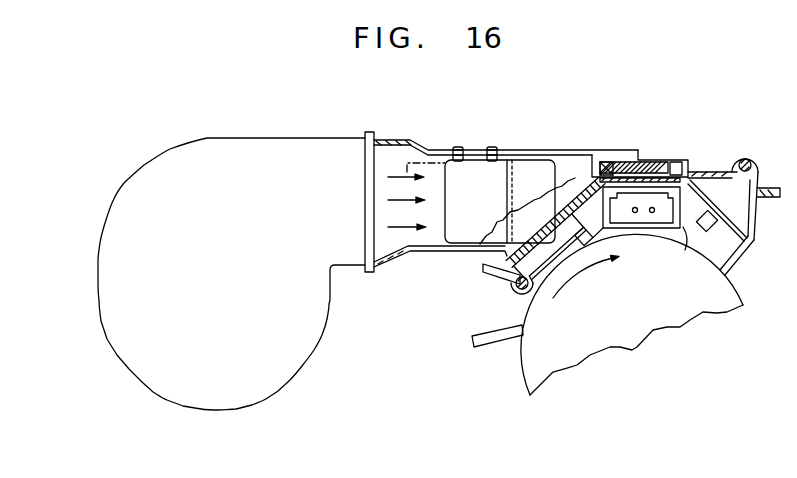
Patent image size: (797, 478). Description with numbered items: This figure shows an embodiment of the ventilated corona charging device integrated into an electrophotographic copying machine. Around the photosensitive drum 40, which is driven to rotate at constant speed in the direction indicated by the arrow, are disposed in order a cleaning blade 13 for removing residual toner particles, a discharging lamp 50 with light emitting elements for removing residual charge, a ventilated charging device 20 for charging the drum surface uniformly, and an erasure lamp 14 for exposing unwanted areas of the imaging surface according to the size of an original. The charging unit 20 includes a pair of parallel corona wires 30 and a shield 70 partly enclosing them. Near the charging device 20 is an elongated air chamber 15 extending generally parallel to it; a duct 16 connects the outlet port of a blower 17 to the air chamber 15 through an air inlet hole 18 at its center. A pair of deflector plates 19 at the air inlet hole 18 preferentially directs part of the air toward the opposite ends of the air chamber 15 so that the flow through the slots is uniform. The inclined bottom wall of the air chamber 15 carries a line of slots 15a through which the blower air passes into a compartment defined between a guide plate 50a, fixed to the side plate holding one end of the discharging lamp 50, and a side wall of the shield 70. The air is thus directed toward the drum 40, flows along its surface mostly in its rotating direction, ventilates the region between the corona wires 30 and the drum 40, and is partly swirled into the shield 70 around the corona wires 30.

The cleaning blade 13 is at (496, 341).
The erasure lamp 14 is at (712, 231).
The air chamber 15 is at (563, 175).
The slots 15a is at (585, 180).
The duct 16 is at (416, 258).
The blower 17 is at (303, 351).
The air inlet hole 18 is at (530, 175).
The deflector plates 19 is at (498, 172).
The ventilated charging device 20 is at (637, 272).
The corona wires 30 is at (636, 214).
The shield 70 is at (653, 214).
The photosensitive drum 40 is at (553, 378).
The discharging lamp 50 is at (531, 289).
The guide plate 50a is at (622, 257).